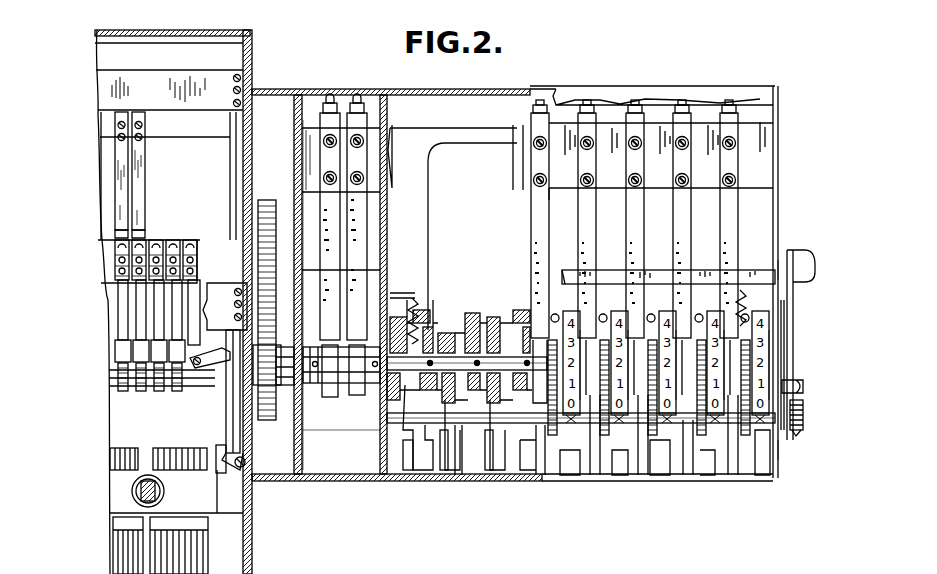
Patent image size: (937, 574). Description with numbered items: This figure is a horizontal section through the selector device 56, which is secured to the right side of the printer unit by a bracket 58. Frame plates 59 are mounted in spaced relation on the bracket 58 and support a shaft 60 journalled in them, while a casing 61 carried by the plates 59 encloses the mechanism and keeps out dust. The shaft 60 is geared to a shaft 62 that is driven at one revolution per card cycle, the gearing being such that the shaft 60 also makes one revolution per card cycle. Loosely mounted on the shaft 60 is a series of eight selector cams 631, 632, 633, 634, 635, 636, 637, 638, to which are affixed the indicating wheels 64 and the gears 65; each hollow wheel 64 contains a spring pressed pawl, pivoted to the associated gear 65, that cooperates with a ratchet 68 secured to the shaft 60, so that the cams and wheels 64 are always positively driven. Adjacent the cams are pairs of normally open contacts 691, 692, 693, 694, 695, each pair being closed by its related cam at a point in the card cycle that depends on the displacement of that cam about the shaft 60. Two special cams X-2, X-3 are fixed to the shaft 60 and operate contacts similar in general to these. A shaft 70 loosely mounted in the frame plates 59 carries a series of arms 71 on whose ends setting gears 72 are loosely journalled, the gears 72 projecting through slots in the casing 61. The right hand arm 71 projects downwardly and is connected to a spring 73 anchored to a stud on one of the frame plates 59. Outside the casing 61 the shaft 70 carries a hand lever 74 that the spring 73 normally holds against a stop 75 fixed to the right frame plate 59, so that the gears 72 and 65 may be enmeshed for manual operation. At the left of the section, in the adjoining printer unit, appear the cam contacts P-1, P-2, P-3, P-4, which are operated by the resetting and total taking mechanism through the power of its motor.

The selector device 56 is at (312, 464).
The bracket 58 is at (436, 150).
The frame plates 59 is at (294, 162).
The shaft 60 is at (403, 363).
The casing 61 is at (610, 470).
The shaft 62 is at (212, 260).
The indicating wheels 64 is at (615, 311).
The gears 65 is at (464, 318).
The ratchet 68 is at (468, 338).
The shaft 70 is at (769, 432).
The arms 71 is at (462, 425).
The setting gears 72 is at (566, 462).
The spring 73 is at (748, 300).
The hand lever 74 is at (794, 318).
The stop 75 is at (805, 385).
The selector cam 631 is at (733, 407).
The selector cam 632 is at (688, 422).
The selector cam 633 is at (650, 402).
The selector cam 634 is at (592, 402).
The selector cam 635 is at (541, 432).
The selector cam 636 is at (496, 405).
The selector cam 637 is at (446, 420).
The selector cam 638 is at (406, 386).
The contacts 691 is at (733, 226).
The contacts 692 is at (685, 229).
The contacts 693 is at (637, 229).
The contacts 694 is at (589, 231).
The contacts 695 is at (539, 238).
The cam contacts P-1 is at (125, 292).
The cam contacts P-2 is at (141, 308).
The cam contacts P-3 is at (159, 324).
The cam contacts P-4 is at (177, 340).
The special cam X-2 is at (328, 400).
The special cam X-3 is at (355, 390).